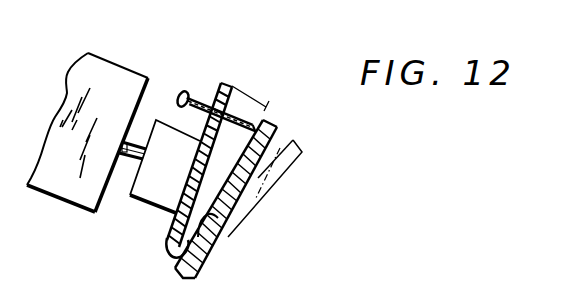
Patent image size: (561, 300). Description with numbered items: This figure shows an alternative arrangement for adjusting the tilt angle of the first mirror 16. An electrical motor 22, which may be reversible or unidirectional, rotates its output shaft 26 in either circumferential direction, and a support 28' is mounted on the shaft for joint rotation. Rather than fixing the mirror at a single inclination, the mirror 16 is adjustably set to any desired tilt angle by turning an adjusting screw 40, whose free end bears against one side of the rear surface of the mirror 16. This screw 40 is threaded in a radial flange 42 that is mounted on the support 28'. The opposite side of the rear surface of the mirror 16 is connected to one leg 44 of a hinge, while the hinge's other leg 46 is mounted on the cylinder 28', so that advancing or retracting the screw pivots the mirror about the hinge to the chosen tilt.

The first mirror 16 is at (273, 120).
The electrical motor 22 is at (95, 70).
The output shaft 26 is at (133, 140).
The support 28' is at (124, 185).
The adjusting screw 40 is at (218, 165).
The radial flange 42 is at (226, 82).
The hinge leg 44 is at (230, 222).
The hinge leg 46 is at (176, 224).